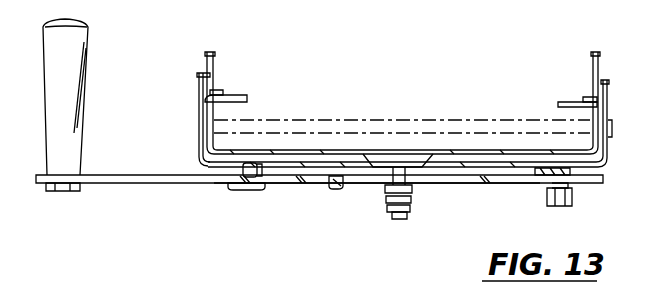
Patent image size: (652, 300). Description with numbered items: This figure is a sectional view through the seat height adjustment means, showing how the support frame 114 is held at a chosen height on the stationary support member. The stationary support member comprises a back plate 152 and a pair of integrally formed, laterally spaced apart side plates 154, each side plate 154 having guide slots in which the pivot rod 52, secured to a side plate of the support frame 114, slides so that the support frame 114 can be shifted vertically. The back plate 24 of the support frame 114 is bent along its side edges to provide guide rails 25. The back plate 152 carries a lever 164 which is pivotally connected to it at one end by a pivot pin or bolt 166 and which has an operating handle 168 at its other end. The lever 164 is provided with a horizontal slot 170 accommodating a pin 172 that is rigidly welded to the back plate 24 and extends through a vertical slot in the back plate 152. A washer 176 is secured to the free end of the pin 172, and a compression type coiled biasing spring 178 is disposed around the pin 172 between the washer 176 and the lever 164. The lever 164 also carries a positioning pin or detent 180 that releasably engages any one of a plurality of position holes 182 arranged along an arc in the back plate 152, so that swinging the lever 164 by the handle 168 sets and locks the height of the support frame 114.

The operating handle 168 is at (89, 45).
The lever 164 is at (144, 184).
The pivot rod 52 is at (407, 120).
The support frame 114 is at (487, 152).
The side plate 154 is at (200, 110).
The back plate 24 is at (458, 160).
The guide rail 25 is at (241, 94).
The positioning pin 180 is at (252, 162).
The position hole 182 is at (263, 168).
The horizontal slot 170 is at (378, 189).
The biasing spring 178 is at (384, 206).
The washer 176 is at (388, 218).
The pin 172 is at (398, 227).
The back plate 152 is at (490, 184).
The pivot pin 166 is at (568, 205).